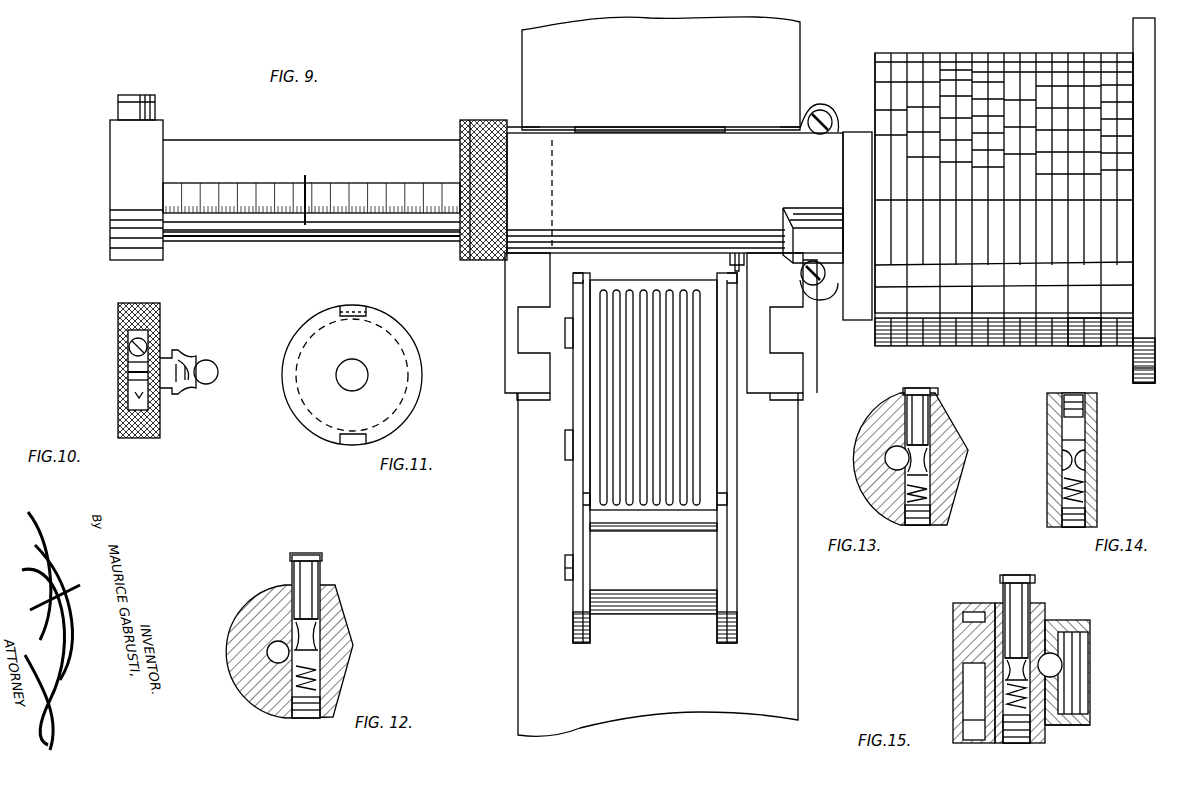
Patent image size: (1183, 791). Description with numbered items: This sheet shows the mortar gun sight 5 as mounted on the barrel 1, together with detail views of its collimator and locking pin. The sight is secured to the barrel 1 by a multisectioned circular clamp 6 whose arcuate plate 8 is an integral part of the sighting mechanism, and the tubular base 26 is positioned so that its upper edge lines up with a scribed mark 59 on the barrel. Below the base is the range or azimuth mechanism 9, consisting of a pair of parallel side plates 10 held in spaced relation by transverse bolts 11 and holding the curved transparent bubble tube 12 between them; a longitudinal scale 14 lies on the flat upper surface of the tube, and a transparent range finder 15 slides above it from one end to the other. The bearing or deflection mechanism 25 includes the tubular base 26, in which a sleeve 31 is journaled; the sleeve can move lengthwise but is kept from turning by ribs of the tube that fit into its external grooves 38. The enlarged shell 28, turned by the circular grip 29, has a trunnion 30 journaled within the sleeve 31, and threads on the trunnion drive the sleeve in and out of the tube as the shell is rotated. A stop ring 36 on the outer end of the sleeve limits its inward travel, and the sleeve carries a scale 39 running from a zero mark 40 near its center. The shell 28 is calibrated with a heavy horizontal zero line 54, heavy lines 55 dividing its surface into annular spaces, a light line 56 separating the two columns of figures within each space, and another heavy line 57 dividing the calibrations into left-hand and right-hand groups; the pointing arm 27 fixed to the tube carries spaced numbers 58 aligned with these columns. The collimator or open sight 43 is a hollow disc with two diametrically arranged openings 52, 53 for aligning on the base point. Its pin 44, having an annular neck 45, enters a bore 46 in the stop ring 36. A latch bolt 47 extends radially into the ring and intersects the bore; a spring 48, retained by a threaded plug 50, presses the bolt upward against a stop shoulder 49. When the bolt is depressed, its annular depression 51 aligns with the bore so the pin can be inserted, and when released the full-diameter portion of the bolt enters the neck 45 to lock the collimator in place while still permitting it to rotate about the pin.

In FIG. 9, the barrel 1 is at (772, 656).
In FIG. 9, the gun sight 5 is at (822, 106).
In FIG. 9, the multisectioned circular clamp 6 is at (520, 297).
In FIG. 9, the arcuate plate 8 is at (770, 378).
In FIG. 9, the range or azimuth mechanism 9 is at (572, 503).
In FIG. 9, the side plates 10 is at (582, 612).
In FIG. 9, the transverse bolts 11 is at (566, 578).
In FIG. 9, the bubble tube 12 is at (135, 112).
In FIG. 13, the longitudinal scale 14 is at (897, 365).
In FIG. 15, the longitudinal scale 14 is at (902, 567).
In FIG. 9, the range finder 15 is at (565, 440).
In FIG. 9, the bearing or deflection mechanism 25 is at (885, 55).
In FIG. 9, the tubular base 26 is at (690, 204).
In FIG. 9, the pointing arm 27 is at (975, 314).
In FIG. 9, the shell 28 is at (1080, 347).
In FIG. 9, the circular handle or grip 29 is at (1143, 385).
In FIG. 14, the trunnion or shaft 30 is at (1093, 438).
In FIG. 9, the sleeve 31 is at (386, 160).
In FIG. 15, the sleeve 31 is at (1080, 724).
In FIG. 9, the stop ring 36 is at (147, 146).
In FIG. 12, the stop ring 36 is at (340, 652).
In FIG. 13, the stop ring 36 is at (945, 462).
In FIG. 15, the stop ring 36 is at (1040, 612).
In FIG. 9, the external grooves 38 is at (381, 233).
In FIG. 9, the scale 39 is at (232, 183).
In FIG. 9, the zero mark 40 is at (306, 176).
In FIG. 10, the collimator or open sight 43 is at (152, 440).
In FIG. 11, the collimator or open sight 43 is at (404, 412).
In FIG. 15, the collimator or open sight 43 is at (955, 693).
In FIG. 10, the pin 44 is at (212, 366).
In FIG. 11, the pin 44 is at (362, 372).
In FIG. 15, the pin 44 is at (1062, 668).
In FIG. 10, the annular neck 45 is at (190, 355).
In FIG. 15, the annular neck 45 is at (1086, 661).
In FIG. 12, the bore 46 is at (278, 640).
In FIG. 13, the bore 46 is at (893, 445).
In FIG. 15, the bore 46 is at (1090, 692).
In FIG. 9, the latch bolt 47 is at (158, 114).
In FIG. 12, the latch bolt 47 is at (308, 585).
In FIG. 13, the latch bolt 47 is at (932, 418).
In FIG. 15, the latch bolt 47 is at (1020, 600).
In FIG. 12, the spring 48 is at (318, 678).
In FIG. 14, the spring 48 is at (1088, 484).
In FIG. 15, the spring 48 is at (1018, 710).
In FIG. 12, the stop shoulder 49 is at (318, 628).
In FIG. 13, the stop shoulder 49 is at (930, 450).
In FIG. 12, the threaded plug 50 is at (292, 706).
In FIG. 13, the threaded plug 50 is at (932, 522).
In FIG. 14, the threaded plug 50 is at (1090, 510).
In FIG. 15, the threaded plug 50 is at (1045, 734).
In FIG. 12, the annular neck or depression 51 is at (322, 636).
In FIG. 13, the annular neck or depression 51 is at (935, 466).
In FIG. 15, the annular neck or depression 51 is at (1005, 652).
In FIG. 10, the opening 52 is at (120, 353).
In FIG. 11, the opening 52 is at (366, 298).
In FIG. 15, the opening 52 is at (965, 614).
In FIG. 10, the opening 53 is at (158, 408).
In FIG. 11, the opening 53 is at (352, 448).
In FIG. 15, the opening 53 is at (972, 738).
In FIG. 9, the heavy horizontal line 54 is at (1115, 198).
In FIG. 9, the heavy lines 55 is at (910, 62).
In FIG. 9, the light line 56 is at (960, 60).
In FIG. 9, the heavy line 57 is at (1010, 63).
In FIG. 9, the spaced numbers 58 is at (893, 313).
In FIG. 9, the scribed or cut mark 59 is at (712, 128).